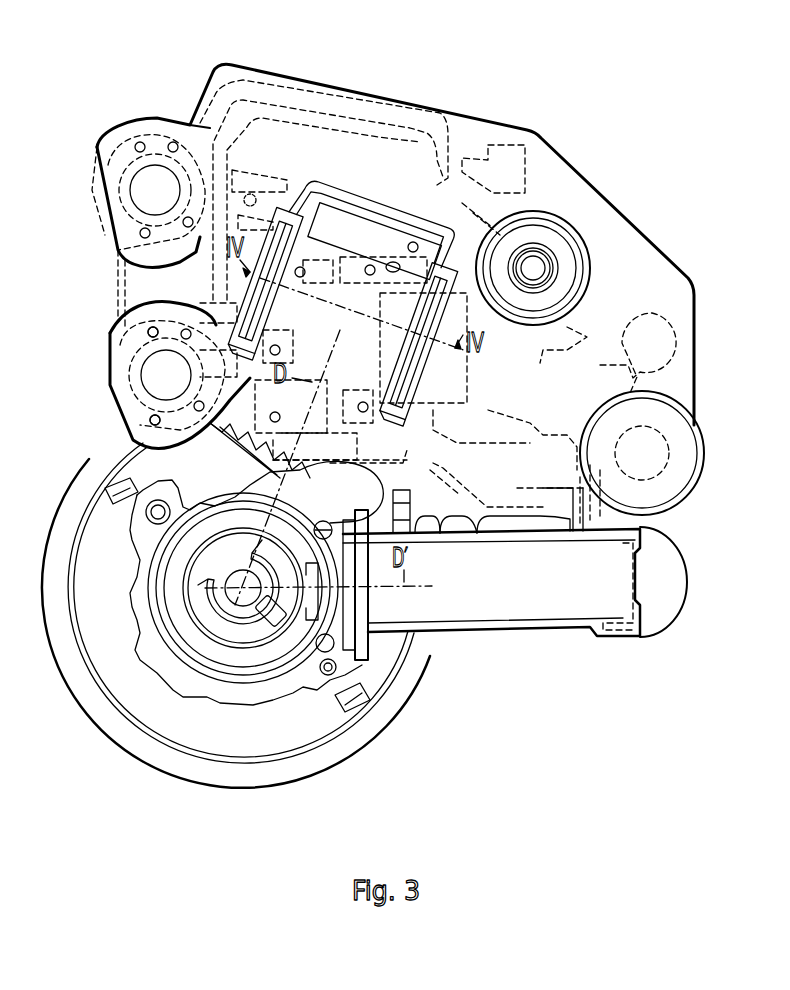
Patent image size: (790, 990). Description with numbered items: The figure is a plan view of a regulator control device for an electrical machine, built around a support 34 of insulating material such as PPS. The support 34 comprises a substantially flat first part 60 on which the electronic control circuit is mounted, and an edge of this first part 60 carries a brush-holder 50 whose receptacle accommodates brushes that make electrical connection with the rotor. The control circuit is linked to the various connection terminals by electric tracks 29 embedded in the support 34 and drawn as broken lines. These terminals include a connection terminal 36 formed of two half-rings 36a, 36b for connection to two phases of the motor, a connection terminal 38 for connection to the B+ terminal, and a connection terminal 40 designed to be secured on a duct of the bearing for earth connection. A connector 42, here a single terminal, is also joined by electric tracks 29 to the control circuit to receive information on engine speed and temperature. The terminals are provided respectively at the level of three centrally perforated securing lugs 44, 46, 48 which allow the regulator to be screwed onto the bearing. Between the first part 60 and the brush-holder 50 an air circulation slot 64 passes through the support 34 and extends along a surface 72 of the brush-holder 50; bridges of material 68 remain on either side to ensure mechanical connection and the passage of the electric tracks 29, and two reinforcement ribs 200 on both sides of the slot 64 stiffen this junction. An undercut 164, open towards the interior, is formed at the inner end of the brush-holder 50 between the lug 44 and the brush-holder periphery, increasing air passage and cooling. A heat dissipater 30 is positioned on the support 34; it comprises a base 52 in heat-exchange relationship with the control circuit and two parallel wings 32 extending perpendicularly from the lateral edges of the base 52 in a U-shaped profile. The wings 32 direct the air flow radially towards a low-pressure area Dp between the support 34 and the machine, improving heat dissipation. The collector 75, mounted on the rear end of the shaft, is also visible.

The electric tracks 29 is at (450, 130).
The heat dissipater 30 is at (354, 168).
The wings 32 is at (288, 256).
The support 34 is at (572, 185).
The connection terminal 36 is at (90, 412).
The half-ring 36a is at (163, 315).
The half-ring 36b is at (170, 440).
The connection terminal 38 is at (174, 112).
The connection terminal 40 is at (663, 492).
The connector 42 is at (585, 256).
The securing lug 44 is at (120, 322).
The securing lug 46 is at (122, 135).
The securing lug 48 is at (608, 425).
The brush-holder 50 is at (527, 632).
The base 52 is at (370, 245).
The first part 60 is at (530, 100).
The air circulation slot 64 is at (445, 520).
The bridges of material 68 is at (385, 510).
The surface of the brush-holder 72 is at (458, 518).
The collector 75 is at (400, 732).
The undercut 164 is at (335, 488).
The reinforcement ribs 200 is at (400, 500).
The low-pressure area Dp is at (215, 558).